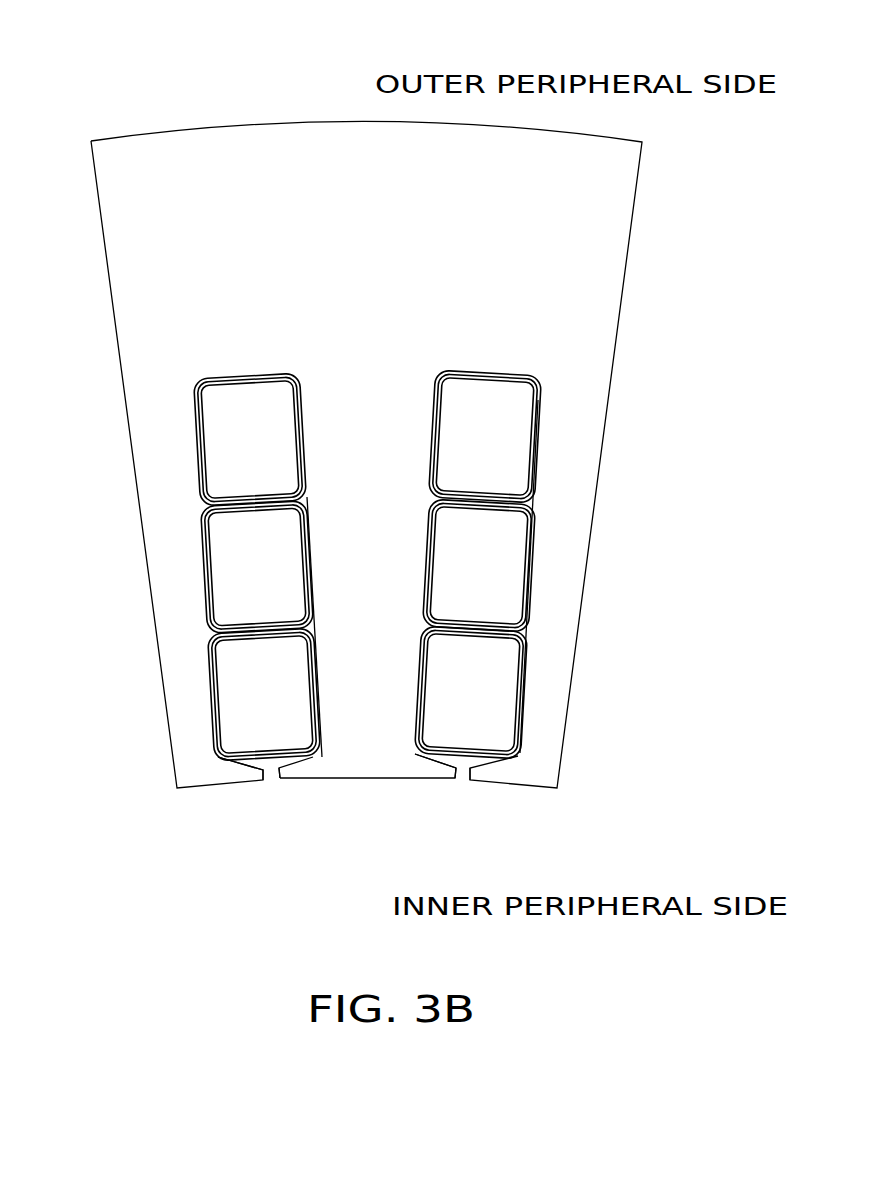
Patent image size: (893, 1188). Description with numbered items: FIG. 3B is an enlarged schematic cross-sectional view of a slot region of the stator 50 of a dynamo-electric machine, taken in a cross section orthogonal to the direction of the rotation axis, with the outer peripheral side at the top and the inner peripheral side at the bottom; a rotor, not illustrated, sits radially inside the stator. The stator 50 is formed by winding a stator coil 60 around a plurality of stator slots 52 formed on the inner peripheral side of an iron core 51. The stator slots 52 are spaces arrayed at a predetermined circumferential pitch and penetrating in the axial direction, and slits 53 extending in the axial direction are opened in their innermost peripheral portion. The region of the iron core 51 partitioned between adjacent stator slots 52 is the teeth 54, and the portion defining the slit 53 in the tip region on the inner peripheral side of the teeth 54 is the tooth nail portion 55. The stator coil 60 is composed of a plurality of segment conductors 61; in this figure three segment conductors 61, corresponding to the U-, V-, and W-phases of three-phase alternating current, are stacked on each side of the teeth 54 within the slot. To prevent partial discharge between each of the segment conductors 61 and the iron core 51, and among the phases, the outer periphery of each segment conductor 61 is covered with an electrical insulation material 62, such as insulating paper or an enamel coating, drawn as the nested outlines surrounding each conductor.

The stator 50 is at (108, 106).
The iron core 51 is at (615, 219).
The stator slot 52 is at (268, 762).
The slit 53 is at (462, 777).
The teeth 54 is at (357, 698).
The tooth nail portion 55 is at (435, 770).
The stator coil 60 is at (697, 468).
The segment conductor 61 is at (510, 438).
The electrical insulation material 62 is at (203, 505).